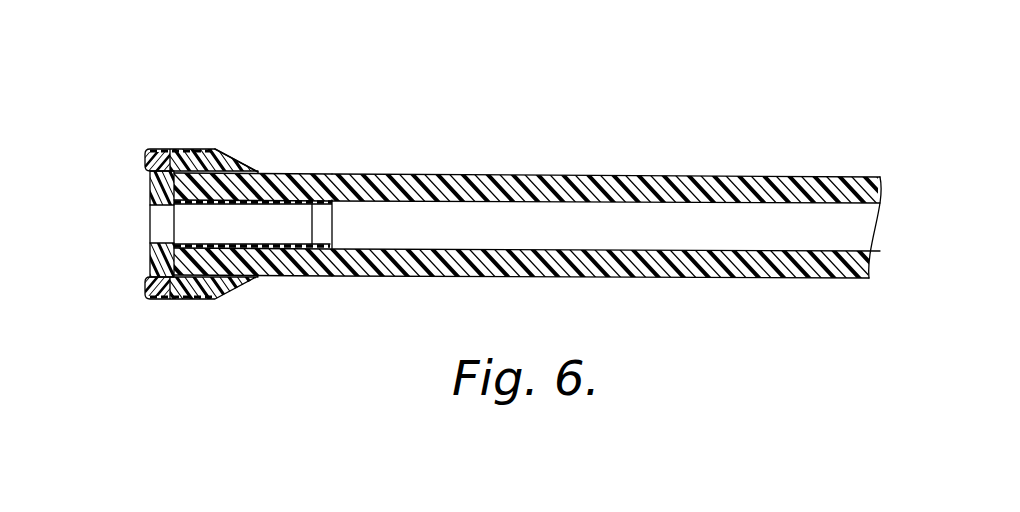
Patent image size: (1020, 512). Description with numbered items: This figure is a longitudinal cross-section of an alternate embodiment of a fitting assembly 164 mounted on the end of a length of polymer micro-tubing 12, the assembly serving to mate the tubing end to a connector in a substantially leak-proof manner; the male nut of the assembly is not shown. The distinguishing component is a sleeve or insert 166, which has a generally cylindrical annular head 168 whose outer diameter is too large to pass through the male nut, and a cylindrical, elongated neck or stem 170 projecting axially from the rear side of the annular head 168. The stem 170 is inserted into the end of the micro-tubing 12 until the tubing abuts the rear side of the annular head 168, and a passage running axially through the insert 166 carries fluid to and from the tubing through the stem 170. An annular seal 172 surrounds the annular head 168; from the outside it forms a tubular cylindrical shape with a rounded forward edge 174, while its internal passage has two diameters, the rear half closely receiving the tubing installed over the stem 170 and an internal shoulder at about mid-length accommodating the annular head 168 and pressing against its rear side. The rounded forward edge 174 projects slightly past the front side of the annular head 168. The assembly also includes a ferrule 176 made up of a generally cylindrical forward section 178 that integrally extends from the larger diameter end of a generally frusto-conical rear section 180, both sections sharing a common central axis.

The polymer micro-tubing 12 is at (845, 190).
The fitting assembly 164 is at (285, 55).
The insert 166 is at (245, 238).
The annular head 168 is at (150, 188).
The stem 170 is at (300, 187).
The annular seal 172 is at (183, 148).
The rounded forward edge 174 is at (143, 162).
The ferrule 176 is at (192, 304).
The forward section 178 is at (155, 150).
The rear section 180 is at (232, 158).